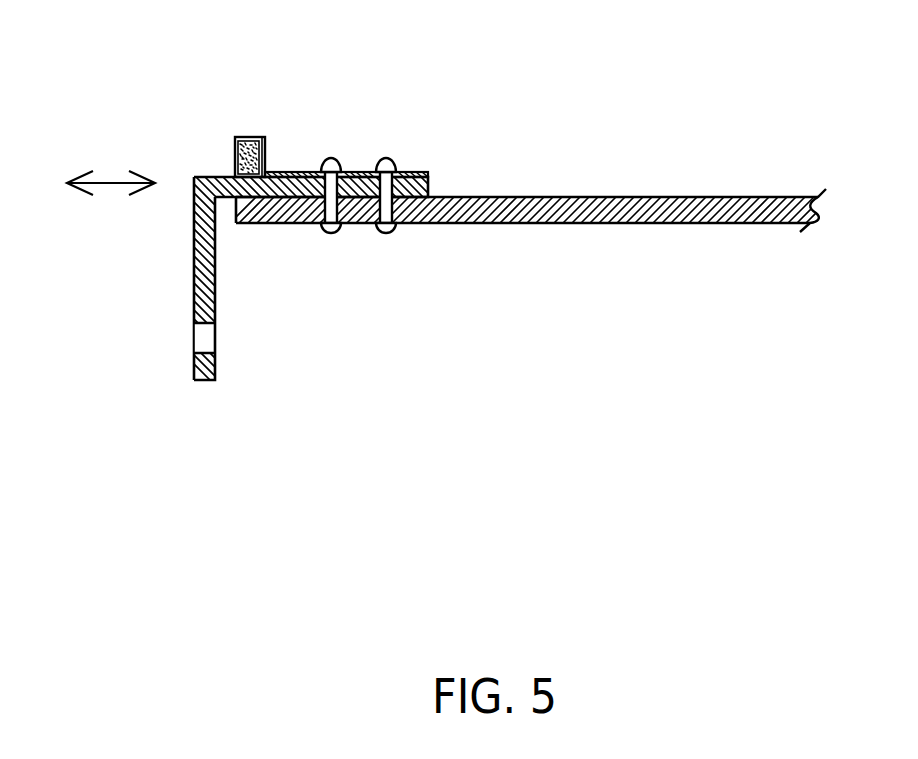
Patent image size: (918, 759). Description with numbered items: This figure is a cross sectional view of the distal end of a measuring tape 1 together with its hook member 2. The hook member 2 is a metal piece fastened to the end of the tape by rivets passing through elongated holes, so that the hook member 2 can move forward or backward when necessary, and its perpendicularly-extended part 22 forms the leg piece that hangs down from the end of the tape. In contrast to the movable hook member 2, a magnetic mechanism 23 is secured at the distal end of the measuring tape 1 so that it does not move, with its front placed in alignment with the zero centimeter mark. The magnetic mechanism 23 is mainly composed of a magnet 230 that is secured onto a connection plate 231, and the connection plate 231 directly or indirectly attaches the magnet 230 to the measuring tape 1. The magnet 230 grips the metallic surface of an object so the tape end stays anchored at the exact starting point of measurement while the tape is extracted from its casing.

The measuring tape 1 is at (560, 197).
The hook member 2 is at (321, 280).
The perpendicularly-extended part 22 is at (193, 307).
The magnetic mechanism 23 is at (274, 93).
The magnet 230 is at (236, 157).
The connection plate 231 is at (410, 171).